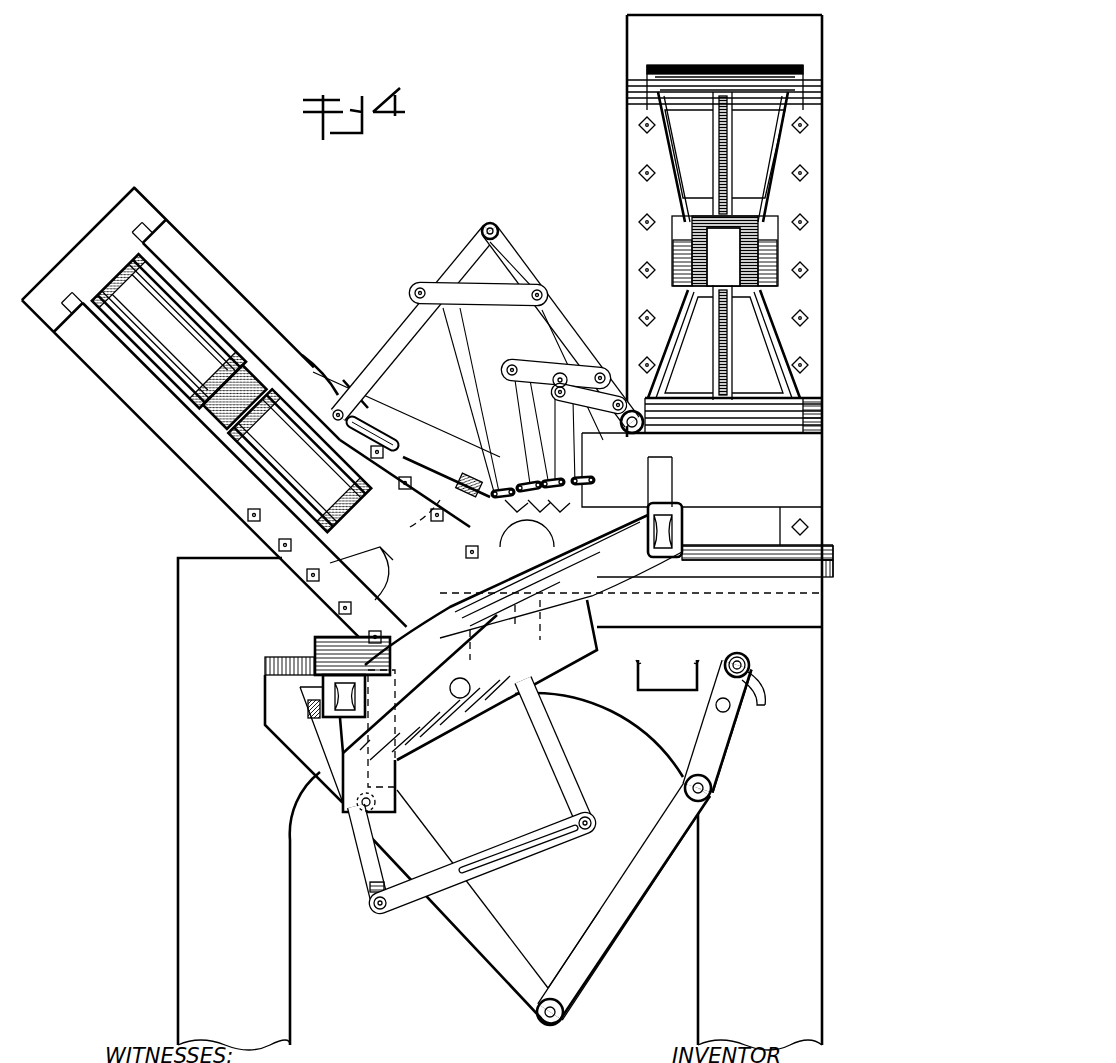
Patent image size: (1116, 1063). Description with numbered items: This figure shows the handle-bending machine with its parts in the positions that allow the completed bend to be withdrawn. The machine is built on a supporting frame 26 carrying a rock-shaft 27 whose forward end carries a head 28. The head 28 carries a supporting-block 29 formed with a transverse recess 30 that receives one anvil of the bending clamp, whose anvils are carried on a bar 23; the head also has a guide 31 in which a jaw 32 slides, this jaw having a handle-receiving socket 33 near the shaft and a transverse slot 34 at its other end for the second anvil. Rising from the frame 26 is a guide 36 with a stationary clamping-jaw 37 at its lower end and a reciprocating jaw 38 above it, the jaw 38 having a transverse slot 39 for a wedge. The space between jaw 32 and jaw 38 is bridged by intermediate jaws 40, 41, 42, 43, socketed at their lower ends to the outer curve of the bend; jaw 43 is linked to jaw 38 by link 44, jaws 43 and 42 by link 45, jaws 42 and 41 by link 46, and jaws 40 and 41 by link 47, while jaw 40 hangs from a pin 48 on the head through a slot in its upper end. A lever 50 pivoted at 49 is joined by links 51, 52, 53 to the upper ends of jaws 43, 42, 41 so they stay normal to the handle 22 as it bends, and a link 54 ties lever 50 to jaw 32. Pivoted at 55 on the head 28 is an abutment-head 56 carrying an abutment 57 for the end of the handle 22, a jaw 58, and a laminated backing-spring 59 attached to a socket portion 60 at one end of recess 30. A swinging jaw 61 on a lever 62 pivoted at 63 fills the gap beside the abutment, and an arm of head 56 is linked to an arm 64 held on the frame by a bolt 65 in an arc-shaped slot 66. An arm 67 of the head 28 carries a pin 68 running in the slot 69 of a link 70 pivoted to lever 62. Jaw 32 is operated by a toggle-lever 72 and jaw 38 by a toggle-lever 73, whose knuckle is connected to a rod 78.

The handle 22 is at (724, 560).
The plate or bar 23 is at (599, 721).
The supporting-frame 26 is at (500, 804).
The rock-shaft 27 is at (527, 538).
The head 28 is at (425, 440).
The supporting-block 29 is at (505, 700).
The transverse recess 30 is at (523, 637).
The guide 31 is at (232, 452).
The jaw 32 is at (365, 503).
The handle-receiving socket 33 is at (410, 530).
The transverse slot 34 is at (328, 585).
The guide 36 is at (725, 72).
The stationary clamping-jaw 37 is at (631, 610).
The jaw 38 is at (702, 530).
The transverse slot 39 is at (661, 482).
The intermediate jaw 40 is at (446, 477).
The intermediate jaw 41 is at (482, 400).
The intermediate jaw 42 is at (531, 432).
The intermediate jaw 43 is at (566, 438).
The link 44 is at (590, 486).
The link 45 is at (557, 492).
The link 46 is at (524, 518).
The link 47 is at (468, 400).
The pin 48 is at (336, 400).
The pivot 49 is at (633, 434).
The lever 50 is at (520, 268).
The link 51 is at (583, 400).
The link 52 is at (545, 372).
The link 53 is at (489, 298).
The link 54 is at (418, 333).
The pivot 55 is at (460, 700).
The abutment-head 56 is at (336, 784).
The abutment 57 is at (330, 650).
The jaw 58 is at (333, 690).
The laminated backing-spring 59 is at (436, 732).
The socket portion 60 is at (510, 652).
The swinging jaw 61 is at (316, 710).
The lever 62 is at (370, 878).
The pivot 63 is at (354, 826).
The arm 64 is at (704, 757).
The bolt 65 is at (730, 660).
The arc-shaped slot 66 is at (768, 698).
The arm 67 is at (568, 775).
The pin 68 is at (577, 823).
The slot 69 is at (515, 850).
The link 70 is at (413, 894).
The toggle-lever 72 is at (165, 345).
The toggle-lever 73 is at (724, 262).
The rod 78 is at (706, 226).